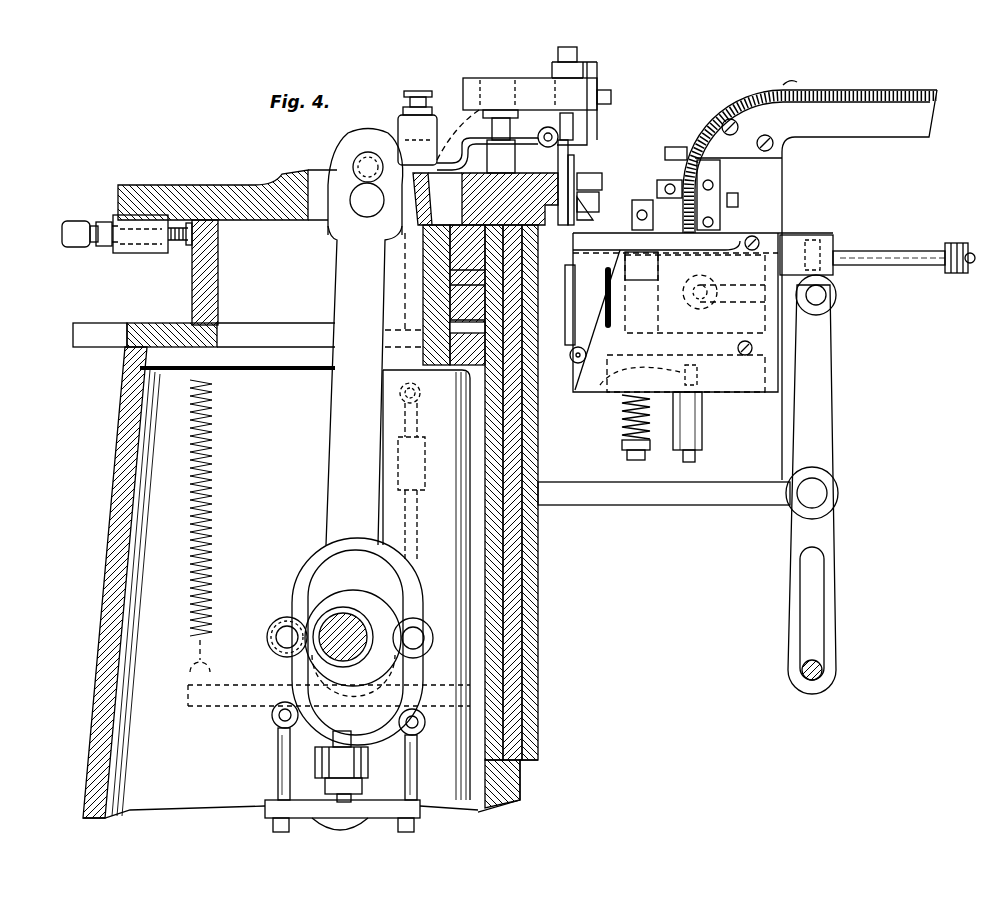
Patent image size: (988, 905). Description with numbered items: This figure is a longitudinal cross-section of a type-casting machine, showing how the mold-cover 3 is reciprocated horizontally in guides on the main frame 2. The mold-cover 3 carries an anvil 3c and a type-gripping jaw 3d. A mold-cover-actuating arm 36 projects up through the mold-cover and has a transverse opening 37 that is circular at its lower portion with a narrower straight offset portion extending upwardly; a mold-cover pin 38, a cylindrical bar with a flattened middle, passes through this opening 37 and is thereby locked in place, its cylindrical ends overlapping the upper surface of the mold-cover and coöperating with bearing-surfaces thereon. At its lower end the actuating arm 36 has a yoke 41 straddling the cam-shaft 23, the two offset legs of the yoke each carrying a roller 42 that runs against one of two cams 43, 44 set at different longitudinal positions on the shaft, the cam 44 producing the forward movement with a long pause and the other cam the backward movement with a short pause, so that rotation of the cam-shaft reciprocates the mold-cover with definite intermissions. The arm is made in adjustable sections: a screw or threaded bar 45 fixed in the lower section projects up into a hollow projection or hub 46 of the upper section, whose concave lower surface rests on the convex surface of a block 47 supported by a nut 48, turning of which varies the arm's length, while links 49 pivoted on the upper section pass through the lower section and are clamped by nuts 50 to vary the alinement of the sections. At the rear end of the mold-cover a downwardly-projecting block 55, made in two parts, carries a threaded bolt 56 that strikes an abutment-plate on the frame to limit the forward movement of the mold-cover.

The main frame 2 is at (280, 582).
The mold-cover 3 is at (248, 257).
The anvil 3c is at (568, 203).
The type-gripping jaw 3d is at (580, 214).
The cam-shaft 23 is at (347, 640).
The mold-cover-actuating arm 36 is at (365, 337).
The transverse opening 37 is at (367, 200).
The mold-cover pin 38 is at (360, 165).
The yoke 41 is at (339, 641).
The roller 42 is at (420, 627).
The cam 43 is at (365, 607).
The cam 44 is at (337, 598).
The screw or threaded bar 45 is at (352, 798).
The hollow projection or hub 46 is at (368, 760).
The block 47 is at (333, 758).
The nut 48 is at (325, 790).
The links 49 is at (280, 756).
The nuts 50 is at (273, 827).
The downwardly-projecting block 55 is at (145, 253).
The threaded bolt 56 is at (182, 248).